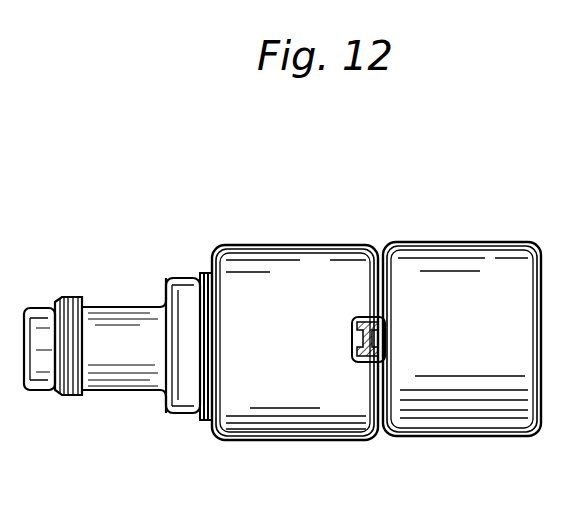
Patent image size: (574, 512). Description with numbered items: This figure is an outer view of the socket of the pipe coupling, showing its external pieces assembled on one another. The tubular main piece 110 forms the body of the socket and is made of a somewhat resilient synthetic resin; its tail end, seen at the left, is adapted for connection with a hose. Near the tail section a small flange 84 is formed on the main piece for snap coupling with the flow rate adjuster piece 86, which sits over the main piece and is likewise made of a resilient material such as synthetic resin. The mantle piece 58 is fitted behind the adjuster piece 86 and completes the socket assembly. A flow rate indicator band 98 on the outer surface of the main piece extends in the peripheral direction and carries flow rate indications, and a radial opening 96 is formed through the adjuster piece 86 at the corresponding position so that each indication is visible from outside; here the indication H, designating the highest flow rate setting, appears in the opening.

The mantle piece 58 is at (480, 422).
The small flange 84 is at (208, 418).
The flow rate adjuster piece 86 is at (280, 430).
The radial opening 96 is at (370, 360).
The flow rate indicator band 98 is at (370, 325).
The main piece 110 is at (107, 375).